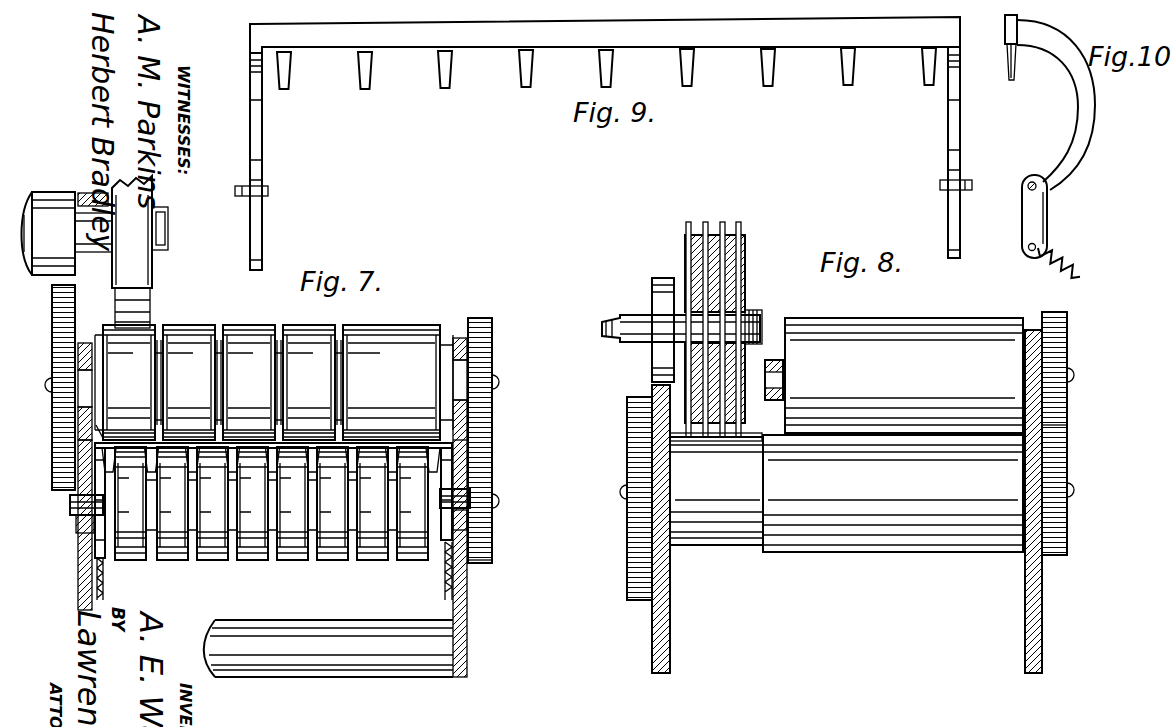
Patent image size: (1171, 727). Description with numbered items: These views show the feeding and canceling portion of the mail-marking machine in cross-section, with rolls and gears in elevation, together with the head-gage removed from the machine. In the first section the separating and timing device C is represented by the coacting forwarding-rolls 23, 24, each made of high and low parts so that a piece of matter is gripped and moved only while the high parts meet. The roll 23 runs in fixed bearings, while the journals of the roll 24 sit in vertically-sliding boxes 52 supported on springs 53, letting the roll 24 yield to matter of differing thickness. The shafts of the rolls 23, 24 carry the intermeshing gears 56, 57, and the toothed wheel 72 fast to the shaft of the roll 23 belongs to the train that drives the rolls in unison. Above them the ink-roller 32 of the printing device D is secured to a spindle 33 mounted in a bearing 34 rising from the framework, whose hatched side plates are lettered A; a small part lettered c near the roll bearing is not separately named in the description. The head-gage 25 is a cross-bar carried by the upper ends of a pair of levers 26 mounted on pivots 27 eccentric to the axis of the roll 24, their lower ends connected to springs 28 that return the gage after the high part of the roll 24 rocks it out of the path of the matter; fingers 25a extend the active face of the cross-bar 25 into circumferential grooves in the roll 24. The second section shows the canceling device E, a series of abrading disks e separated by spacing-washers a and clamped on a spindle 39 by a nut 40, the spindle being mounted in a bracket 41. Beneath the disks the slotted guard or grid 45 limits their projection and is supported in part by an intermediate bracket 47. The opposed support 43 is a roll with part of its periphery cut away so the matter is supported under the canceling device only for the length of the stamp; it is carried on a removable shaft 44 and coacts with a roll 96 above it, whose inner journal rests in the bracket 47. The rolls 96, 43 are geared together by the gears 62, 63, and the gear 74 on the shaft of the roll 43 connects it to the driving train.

In FIG. 7, the forwarding-roller 23 is at (274, 382).
In FIG. 7, the forwarding-roller 24 is at (271, 503).
In FIG. 7, the head-gage 25 is at (228, 450).
In FIG. 9, the head-gage 25 is at (605, 35).
In FIG. 10, the head-gage 25 is at (1017, 22).
In FIG. 7, the fingers 25a is at (275, 468).
In FIG. 9, the fingers 25a is at (450, 80).
In FIG. 10, the fingers 25a is at (1014, 78).
In FIG. 7, the levers 26 is at (441, 480).
In FIG. 9, the levers 26 is at (935, 134).
In FIG. 9, the pivots 27 is at (930, 183).
In FIG. 10, the pivots 27 is at (1039, 188).
In FIG. 7, the springs 28 is at (446, 580).
In FIG. 10, the springs 28 is at (1064, 256).
In FIG. 7, the ink-roller 32 is at (132, 232).
In FIG. 7, the spindle 33 is at (165, 245).
In FIG. 7, the bearing 34 is at (67, 233).
In FIG. 8, the spindle 39 is at (681, 328).
In FIG. 8, the nut 40 is at (752, 310).
In FIG. 8, the bracket 41 is at (638, 329).
In FIG. 8, the opposed support 43 is at (737, 491).
In FIG. 8, the shaft 44 is at (1025, 490).
In FIG. 8, the guard or grid 45 is at (715, 442).
In FIG. 8, the intermediate bracket 47 is at (784, 394).
In FIG. 7, the vertically-sliding box 52 is at (505, 478).
In FIG. 7, the springs 53 is at (508, 538).
In FIG. 7, the gear 56 is at (492, 340).
In FIG. 7, the gear 57 is at (492, 562).
In FIG. 8, the gear 62 is at (1067, 335).
In FIG. 8, the gear 63 is at (1067, 452).
In FIG. 7, the toothed wheel 72 is at (52, 318).
In FIG. 8, the gear 74 is at (627, 437).
In FIG. 8, the roll 96 is at (904, 375).
In FIG. 8, the spacing-washers a is at (690, 228).
In FIG. 8, the abrading disks e is at (720, 226).
In FIG. 7, the catch c is at (100, 428).
In FIG. 7, the frame plate A is at (467, 632).
In FIG. 8, the frame plate A is at (1052, 602).
In FIG. 7, the separating and timing device C is at (484, 446).
In FIG. 7, the printing device D is at (142, 308).
In FIG. 8, the canceling device E is at (723, 318).